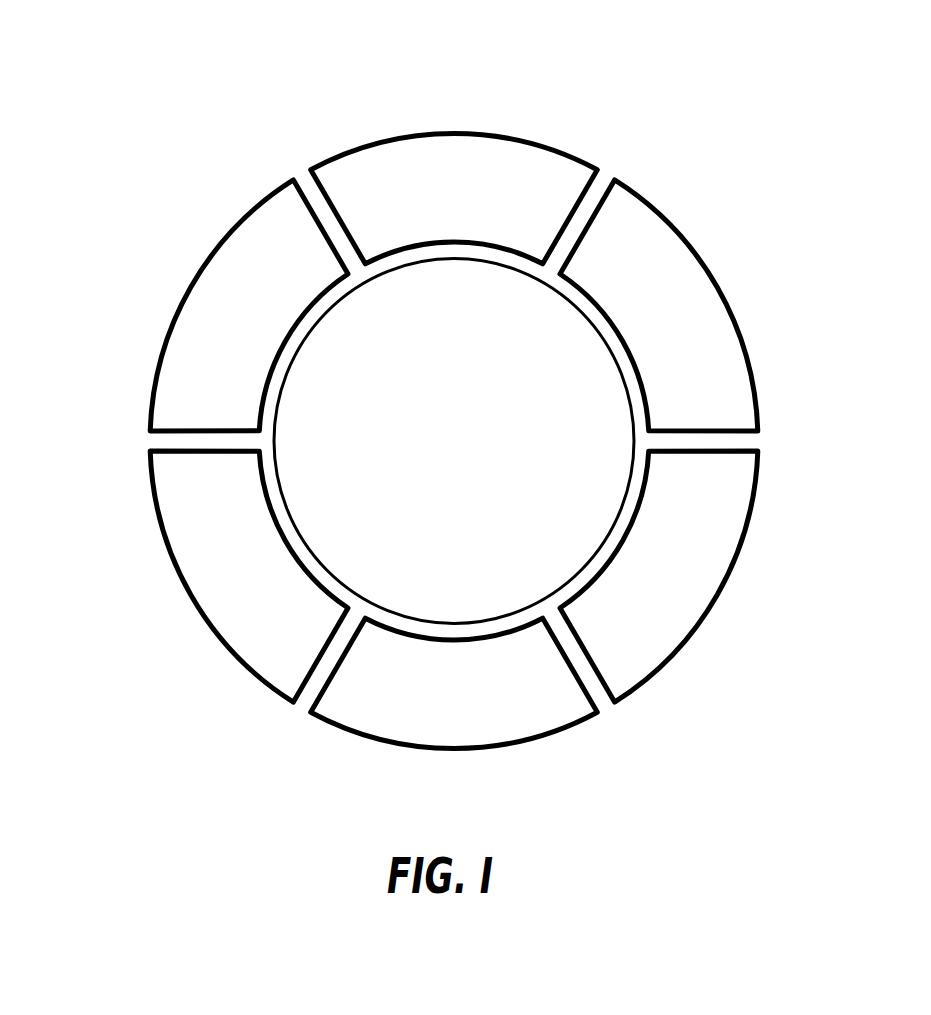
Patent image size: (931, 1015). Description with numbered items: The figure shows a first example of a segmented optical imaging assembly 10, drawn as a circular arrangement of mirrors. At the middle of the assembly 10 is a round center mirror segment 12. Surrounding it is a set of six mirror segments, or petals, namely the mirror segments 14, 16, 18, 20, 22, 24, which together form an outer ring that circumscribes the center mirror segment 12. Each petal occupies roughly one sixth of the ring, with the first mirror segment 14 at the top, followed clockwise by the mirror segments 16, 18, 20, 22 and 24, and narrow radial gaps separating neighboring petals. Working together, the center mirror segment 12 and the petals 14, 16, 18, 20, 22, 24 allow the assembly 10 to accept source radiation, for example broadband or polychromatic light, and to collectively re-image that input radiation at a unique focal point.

The segmented optical imaging assembly 10 is at (448, 416).
The center mirror segment 12 is at (452, 377).
The mirror segment 14 is at (467, 165).
The mirror segment 16 is at (665, 320).
The mirror segment 18 is at (682, 583).
The mirror segment 20 is at (463, 715).
The mirror segment 22 is at (220, 542).
The mirror segment 24 is at (222, 305).